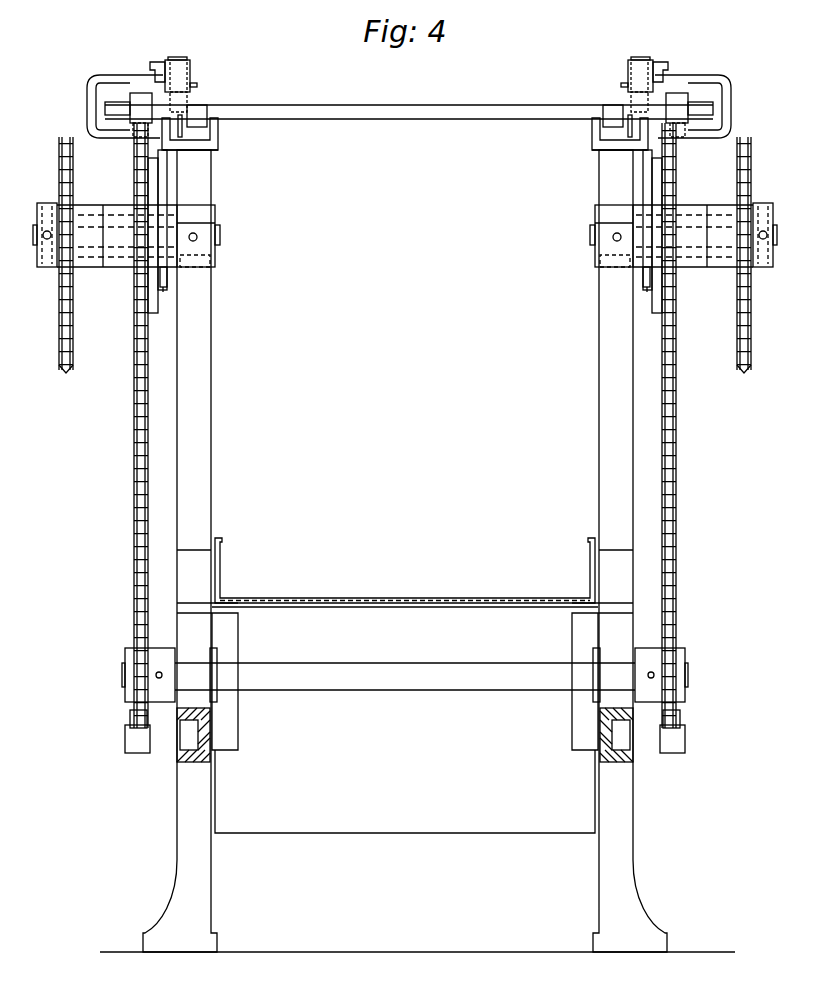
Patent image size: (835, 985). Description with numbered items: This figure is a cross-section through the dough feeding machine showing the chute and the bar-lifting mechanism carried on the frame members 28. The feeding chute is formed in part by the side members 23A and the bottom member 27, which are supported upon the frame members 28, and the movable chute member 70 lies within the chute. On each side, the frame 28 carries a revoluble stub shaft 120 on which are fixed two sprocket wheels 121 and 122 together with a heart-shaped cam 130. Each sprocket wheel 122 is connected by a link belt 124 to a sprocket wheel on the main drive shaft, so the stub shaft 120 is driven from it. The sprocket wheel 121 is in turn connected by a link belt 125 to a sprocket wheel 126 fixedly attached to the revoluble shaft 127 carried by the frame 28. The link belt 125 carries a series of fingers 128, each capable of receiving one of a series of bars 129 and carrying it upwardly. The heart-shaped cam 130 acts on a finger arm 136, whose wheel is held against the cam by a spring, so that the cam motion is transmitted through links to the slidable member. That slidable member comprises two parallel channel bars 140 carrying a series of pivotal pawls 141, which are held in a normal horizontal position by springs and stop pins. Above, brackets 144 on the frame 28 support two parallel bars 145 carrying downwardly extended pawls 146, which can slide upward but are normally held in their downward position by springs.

The side member 23A is at (222, 540).
The bottom member 27 is at (462, 608).
The frame member 28 is at (207, 425).
The chute member 70 is at (410, 597).
The revoluble stub shaft 120 is at (35, 255).
The sprocket wheel 121 is at (60, 205).
The sprocket wheel 122 is at (115, 205).
The link belt 124 is at (66, 374).
The link belt 125 is at (134, 497).
The sprocket wheel 126 is at (160, 705).
The revoluble shaft 127 is at (418, 692).
The finger 128 is at (140, 93).
The bar 129 is at (394, 106).
The heart-shaped cam 130 is at (152, 292).
The finger arm 136 is at (164, 300).
The channel bar 140 is at (215, 147).
The pivotal pawl 141 is at (200, 110).
The bracket 144 is at (88, 96).
The parallel bar 145 is at (190, 70).
The downwardly extended pawl 146 is at (184, 100).